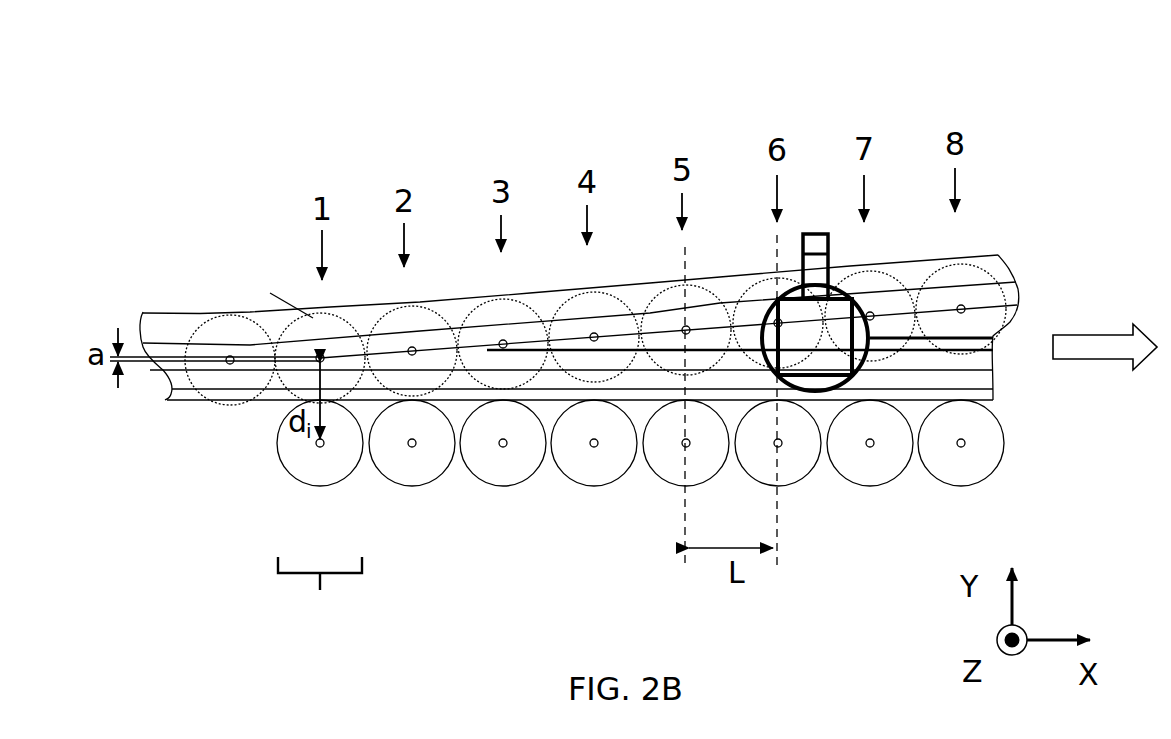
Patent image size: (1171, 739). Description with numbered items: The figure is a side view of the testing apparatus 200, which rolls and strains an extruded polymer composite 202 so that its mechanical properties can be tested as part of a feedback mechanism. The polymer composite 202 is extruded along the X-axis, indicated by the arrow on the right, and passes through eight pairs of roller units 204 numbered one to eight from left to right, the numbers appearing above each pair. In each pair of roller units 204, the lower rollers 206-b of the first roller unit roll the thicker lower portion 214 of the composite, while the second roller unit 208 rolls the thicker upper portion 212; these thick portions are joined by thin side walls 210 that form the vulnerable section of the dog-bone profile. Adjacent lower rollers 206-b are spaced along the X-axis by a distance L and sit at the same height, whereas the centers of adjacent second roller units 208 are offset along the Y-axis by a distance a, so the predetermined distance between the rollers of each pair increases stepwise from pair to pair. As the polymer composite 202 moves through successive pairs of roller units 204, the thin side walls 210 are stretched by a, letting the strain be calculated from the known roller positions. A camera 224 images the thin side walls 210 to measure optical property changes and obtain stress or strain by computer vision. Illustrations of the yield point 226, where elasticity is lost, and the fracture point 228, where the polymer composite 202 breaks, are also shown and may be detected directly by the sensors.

The testing apparatus 200 is at (1002, 147).
The extruded polymer composite 202 is at (1000, 263).
The pair of roller units 204 is at (320, 600).
The lower roller 206-b is at (310, 482).
The second roller unit 208 is at (252, 292).
The thin side walls 210 is at (163, 372).
The thicker upper portion 212 is at (173, 327).
The thicker lower portion 214 is at (167, 398).
The camera 224 is at (775, 322).
The yield point 226 is at (487, 350).
The fracture point 228 is at (877, 342).